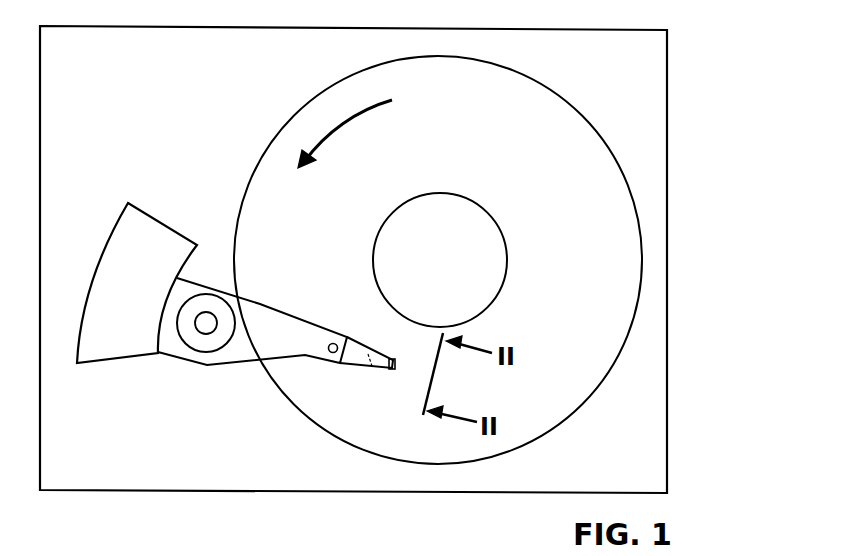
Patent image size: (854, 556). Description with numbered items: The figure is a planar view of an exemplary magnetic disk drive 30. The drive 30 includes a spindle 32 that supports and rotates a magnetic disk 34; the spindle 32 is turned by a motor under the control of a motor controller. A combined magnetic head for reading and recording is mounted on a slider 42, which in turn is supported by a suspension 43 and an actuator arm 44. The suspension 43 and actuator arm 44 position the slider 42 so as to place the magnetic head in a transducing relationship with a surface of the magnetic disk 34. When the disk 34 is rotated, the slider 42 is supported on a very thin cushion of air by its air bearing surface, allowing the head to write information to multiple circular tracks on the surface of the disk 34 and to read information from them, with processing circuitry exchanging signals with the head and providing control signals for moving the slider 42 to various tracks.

The magnetic disk drive 30 is at (690, 37).
The spindle 32 is at (477, 205).
The magnetic disk 34 is at (588, 282).
The slider 42 is at (400, 368).
The suspension 43 is at (355, 365).
The actuator arm 44 is at (262, 303).